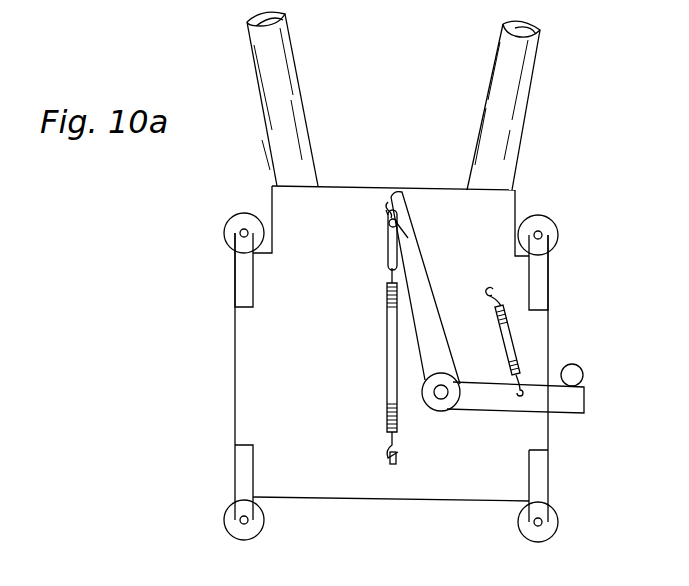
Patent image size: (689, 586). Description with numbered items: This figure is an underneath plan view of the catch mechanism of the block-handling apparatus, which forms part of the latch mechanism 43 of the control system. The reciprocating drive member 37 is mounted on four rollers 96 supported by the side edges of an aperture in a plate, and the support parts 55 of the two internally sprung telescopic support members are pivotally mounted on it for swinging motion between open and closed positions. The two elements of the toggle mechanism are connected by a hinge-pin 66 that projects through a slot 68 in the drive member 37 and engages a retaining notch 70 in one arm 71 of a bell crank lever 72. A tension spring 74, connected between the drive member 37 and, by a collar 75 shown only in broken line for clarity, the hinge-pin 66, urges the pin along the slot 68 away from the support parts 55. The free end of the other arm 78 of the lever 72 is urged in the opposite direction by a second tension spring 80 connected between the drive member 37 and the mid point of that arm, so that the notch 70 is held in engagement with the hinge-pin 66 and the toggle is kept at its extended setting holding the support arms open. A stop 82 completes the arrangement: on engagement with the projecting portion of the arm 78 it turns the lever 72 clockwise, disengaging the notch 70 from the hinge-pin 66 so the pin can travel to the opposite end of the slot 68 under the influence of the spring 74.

The drive member 37 is at (308, 357).
The latch mechanism 43 is at (378, 215).
The support parts 55 is at (284, 99).
The hinge-pin 66 is at (386, 223).
The slot 68 is at (389, 205).
The retaining notch 70 is at (389, 240).
The arm 71 is at (423, 302).
The bell crank lever 72 is at (483, 400).
The tension spring 74 is at (390, 352).
The collar 75 is at (410, 238).
The arm 78 is at (577, 409).
The second tension spring 80 is at (508, 333).
The stop 82 is at (576, 366).
The rollers 96 is at (225, 233).